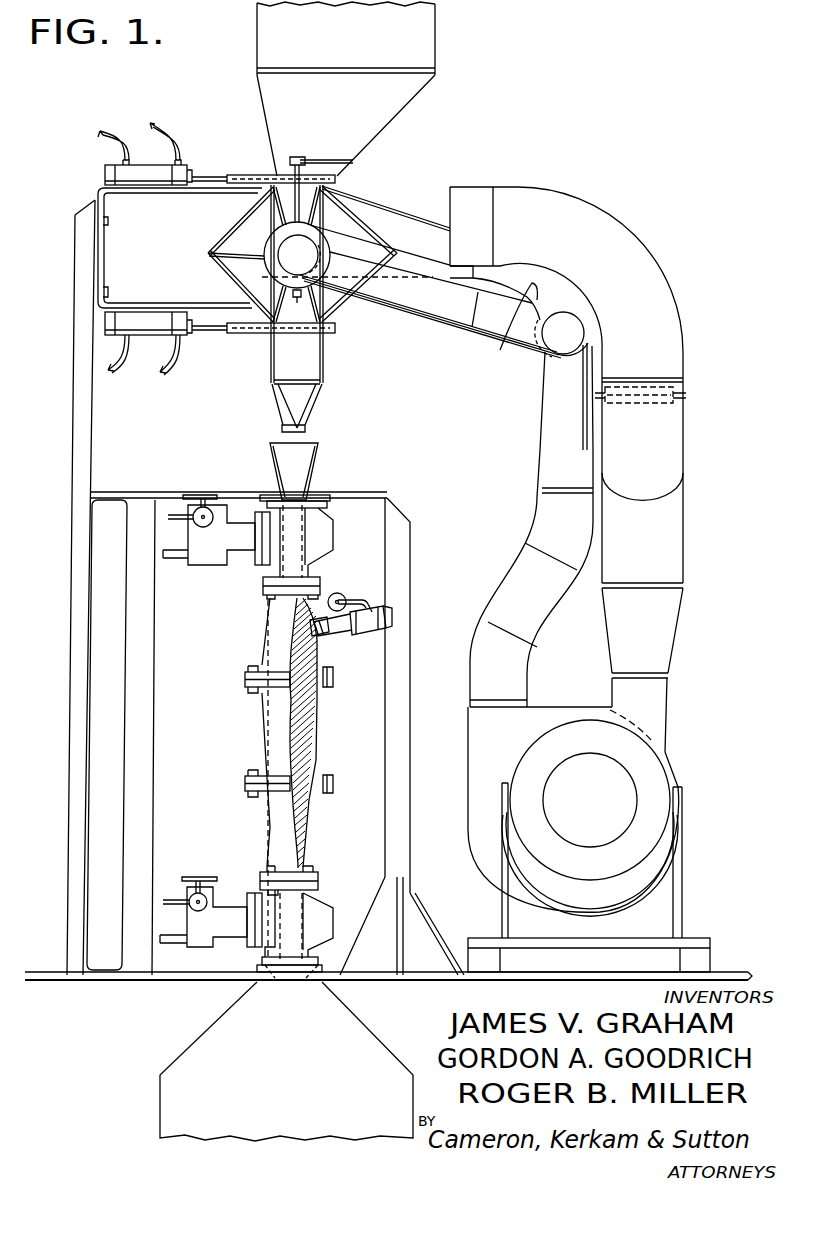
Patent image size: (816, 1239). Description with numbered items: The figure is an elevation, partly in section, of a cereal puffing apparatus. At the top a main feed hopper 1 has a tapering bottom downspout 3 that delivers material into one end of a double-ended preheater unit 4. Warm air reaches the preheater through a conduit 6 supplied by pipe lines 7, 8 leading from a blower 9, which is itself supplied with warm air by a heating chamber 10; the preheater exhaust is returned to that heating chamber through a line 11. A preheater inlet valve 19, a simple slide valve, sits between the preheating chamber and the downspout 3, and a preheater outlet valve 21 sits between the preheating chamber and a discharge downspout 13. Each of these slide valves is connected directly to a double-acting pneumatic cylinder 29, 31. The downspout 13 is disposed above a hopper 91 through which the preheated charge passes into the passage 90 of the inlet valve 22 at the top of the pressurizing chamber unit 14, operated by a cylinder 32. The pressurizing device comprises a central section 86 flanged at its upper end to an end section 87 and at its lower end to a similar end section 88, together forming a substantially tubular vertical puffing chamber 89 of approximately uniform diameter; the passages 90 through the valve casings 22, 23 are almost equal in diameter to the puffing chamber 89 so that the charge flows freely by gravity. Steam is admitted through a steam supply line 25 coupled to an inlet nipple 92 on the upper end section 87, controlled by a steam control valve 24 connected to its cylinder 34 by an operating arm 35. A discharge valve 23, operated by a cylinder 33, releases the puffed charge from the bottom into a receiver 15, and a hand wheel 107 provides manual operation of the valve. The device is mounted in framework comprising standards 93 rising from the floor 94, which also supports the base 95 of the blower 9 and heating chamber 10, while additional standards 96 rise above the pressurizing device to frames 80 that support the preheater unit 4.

The main feed hopper 1 is at (420, 45).
The downspout 3 is at (373, 118).
The preheater unit 4 is at (330, 207).
The warm air conduit 6 is at (313, 230).
The pipe line 7 is at (517, 303).
The pipe line 8 is at (435, 303).
The blower 9 is at (538, 774).
The heating chamber 10 is at (478, 742).
The exhaust return line 11 is at (650, 280).
The discharge downspout 13 is at (283, 367).
The pressurizing chamber unit 14 is at (267, 728).
The receiver 15 is at (195, 1060).
The preheater inlet valve 19 is at (274, 160).
The preheater outlet valve 21 is at (247, 330).
The inlet valve 22 is at (292, 547).
The discharge valve 23 is at (283, 913).
The steam control valve 24 is at (365, 627).
The steam supply line 25 is at (345, 627).
The pneumatic cylinder 29 is at (147, 167).
The pneumatic cylinder 31 is at (147, 337).
The pneumatic cylinder 32 is at (213, 505).
The pneumatic cylinder 33 is at (210, 897).
The pneumatic cylinder 34 is at (337, 593).
The operating arm 35 is at (342, 602).
The frame 80 is at (147, 190).
The central section 86 is at (318, 737).
The upper end section 87 is at (267, 637).
The lower end section 88 is at (313, 838).
The puffing chamber 89 is at (300, 705).
The valve passage 90 is at (303, 527).
The hopper 91 is at (320, 452).
The inlet nipple 92 is at (317, 637).
The standards 93 is at (133, 767).
The floor 94 is at (463, 972).
The base 95 is at (640, 940).
The additional standards 96 is at (85, 424).
The hand wheel 107 is at (186, 867).